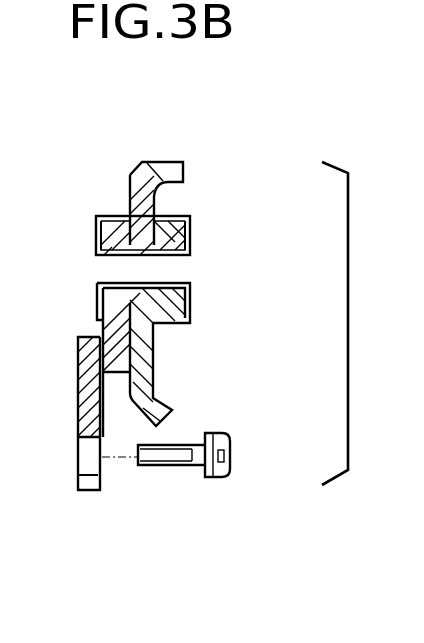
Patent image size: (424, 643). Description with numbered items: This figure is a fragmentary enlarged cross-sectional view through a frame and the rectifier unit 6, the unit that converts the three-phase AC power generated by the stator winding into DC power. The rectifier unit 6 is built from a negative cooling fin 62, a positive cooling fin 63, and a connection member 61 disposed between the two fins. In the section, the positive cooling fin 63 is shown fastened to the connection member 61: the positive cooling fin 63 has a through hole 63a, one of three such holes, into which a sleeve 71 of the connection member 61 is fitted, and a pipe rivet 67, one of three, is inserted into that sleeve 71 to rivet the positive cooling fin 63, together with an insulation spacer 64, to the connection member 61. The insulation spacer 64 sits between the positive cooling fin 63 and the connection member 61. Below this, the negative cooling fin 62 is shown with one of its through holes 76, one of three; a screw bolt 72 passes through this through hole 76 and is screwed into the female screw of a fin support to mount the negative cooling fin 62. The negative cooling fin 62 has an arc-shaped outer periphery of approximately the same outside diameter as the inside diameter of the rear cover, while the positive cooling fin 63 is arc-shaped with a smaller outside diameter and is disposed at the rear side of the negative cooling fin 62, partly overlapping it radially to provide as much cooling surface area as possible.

The rectifier unit 6 is at (226, 373).
The connection member 61 is at (108, 213).
The negative cooling fin 62 is at (80, 378).
The positive cooling fin 63 is at (148, 172).
The through hole 63a is at (188, 240).
The insulation spacer 64 is at (167, 220).
The pipe rivet 67 is at (98, 230).
The sleeve 71 is at (170, 325).
The screw bolt 72 is at (225, 477).
The through hole 76 is at (92, 473).